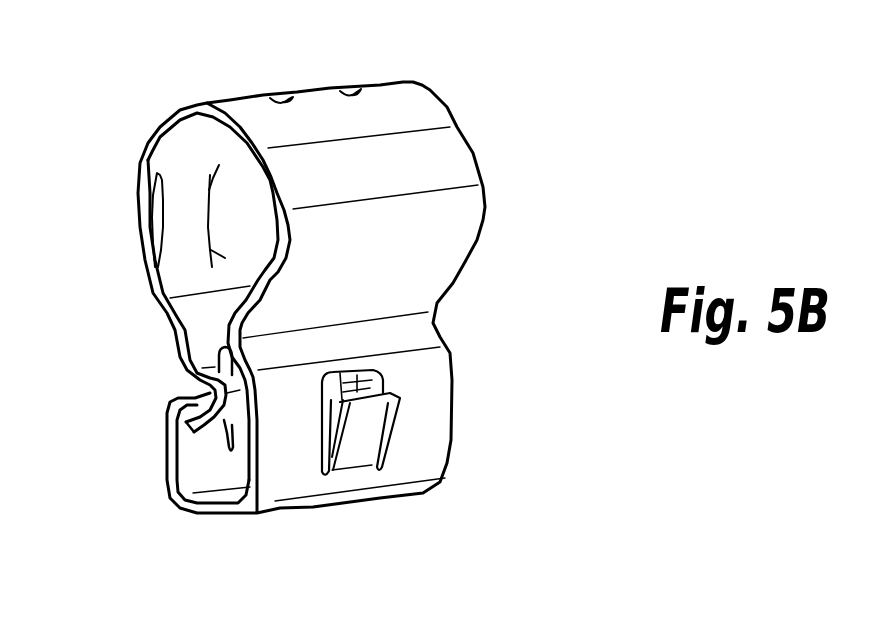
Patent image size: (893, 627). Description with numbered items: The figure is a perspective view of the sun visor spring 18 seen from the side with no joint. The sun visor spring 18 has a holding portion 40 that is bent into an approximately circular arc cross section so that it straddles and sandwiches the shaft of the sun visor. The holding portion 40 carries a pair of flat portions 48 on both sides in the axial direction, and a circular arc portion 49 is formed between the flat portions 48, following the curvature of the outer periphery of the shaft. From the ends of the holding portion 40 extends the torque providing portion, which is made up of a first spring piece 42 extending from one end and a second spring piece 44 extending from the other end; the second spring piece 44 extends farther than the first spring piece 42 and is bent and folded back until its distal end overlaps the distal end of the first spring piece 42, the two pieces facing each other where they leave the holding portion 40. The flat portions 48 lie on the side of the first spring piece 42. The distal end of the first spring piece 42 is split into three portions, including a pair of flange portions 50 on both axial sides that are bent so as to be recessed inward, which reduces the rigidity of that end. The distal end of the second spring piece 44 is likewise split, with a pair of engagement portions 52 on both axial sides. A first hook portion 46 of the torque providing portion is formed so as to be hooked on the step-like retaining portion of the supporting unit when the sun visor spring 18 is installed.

The sun visor spring 18 is at (432, 540).
The holding portion 40 is at (470, 210).
The first spring piece 42 is at (225, 435).
The second spring piece 44 is at (280, 465).
The first hook portion 46 is at (380, 412).
The flat portions 48 is at (178, 212).
The circular arc portion 49 is at (237, 203).
The flange portions 50 is at (222, 437).
The engagement portions 52 is at (187, 402).